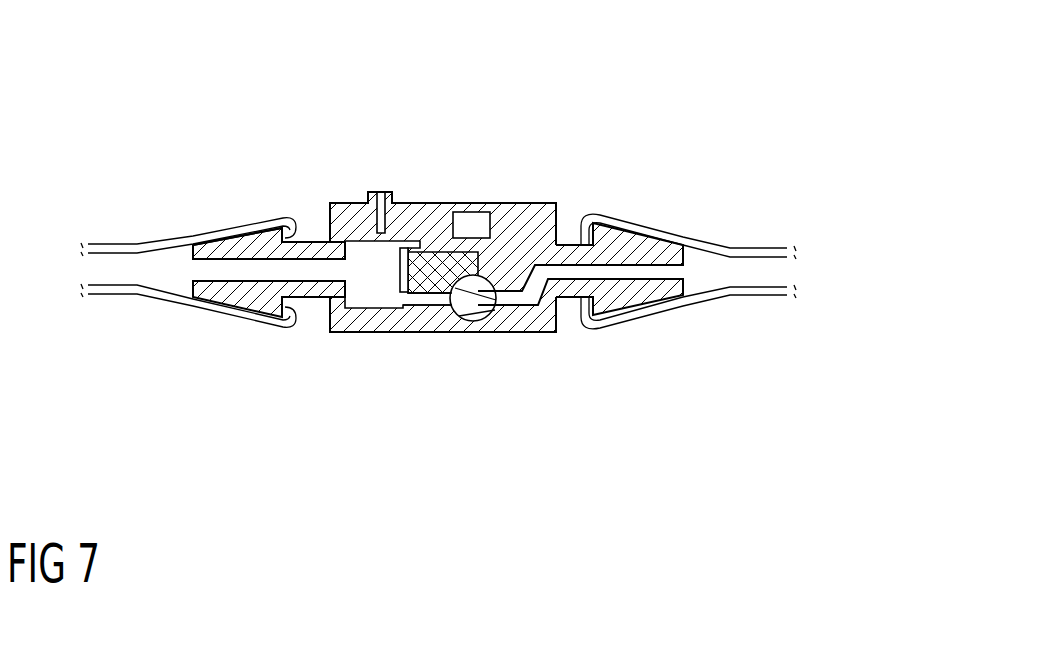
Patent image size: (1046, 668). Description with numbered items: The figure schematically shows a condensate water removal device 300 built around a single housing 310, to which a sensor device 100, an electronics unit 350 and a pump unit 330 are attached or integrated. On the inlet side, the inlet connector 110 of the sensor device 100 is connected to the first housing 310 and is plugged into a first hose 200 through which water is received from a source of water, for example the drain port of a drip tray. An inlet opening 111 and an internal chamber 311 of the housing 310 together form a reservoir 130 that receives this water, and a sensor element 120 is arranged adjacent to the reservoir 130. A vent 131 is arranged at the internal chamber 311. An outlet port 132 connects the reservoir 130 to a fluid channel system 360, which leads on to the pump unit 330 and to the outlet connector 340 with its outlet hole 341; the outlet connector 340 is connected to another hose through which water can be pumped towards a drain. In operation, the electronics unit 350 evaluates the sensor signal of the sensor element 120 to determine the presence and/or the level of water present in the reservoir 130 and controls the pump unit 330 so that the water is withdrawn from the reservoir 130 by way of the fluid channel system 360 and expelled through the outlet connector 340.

The sensor device 100 is at (287, 193).
The inlet connector 110 is at (223, 234).
The inlet opening 111 is at (189, 268).
The sensor element 120 is at (392, 278).
The reservoir 130 is at (355, 270).
The vent 131 is at (378, 191).
The outlet port 132 is at (398, 304).
The first tube 200 is at (111, 296).
The condensate water removal device 300 is at (427, 78).
The first housing 310 is at (414, 199).
The internal chamber 311 is at (356, 252).
The pump unit 330 is at (490, 285).
The outlet connector 340 is at (644, 230).
The outlet hole 341 is at (696, 269).
The electronics unit 350 is at (460, 210).
The fluid channel system 360 is at (552, 333).